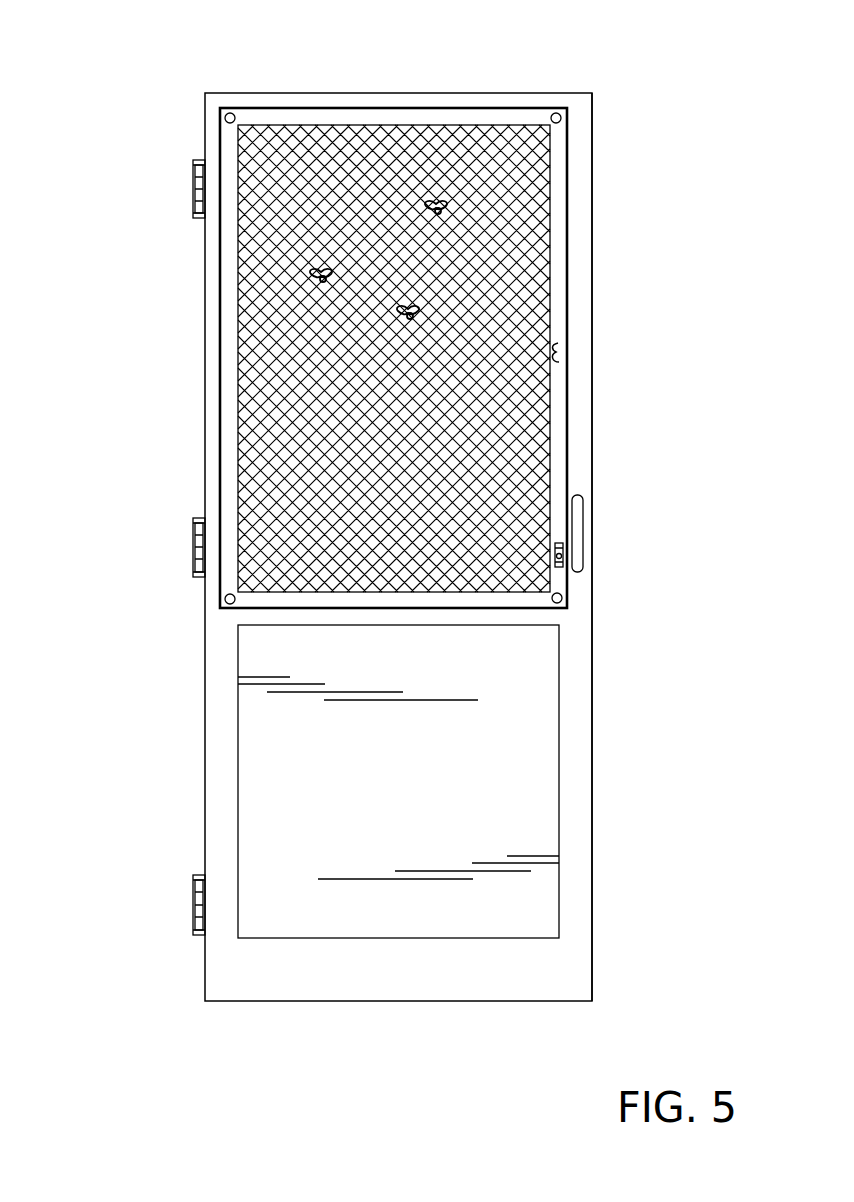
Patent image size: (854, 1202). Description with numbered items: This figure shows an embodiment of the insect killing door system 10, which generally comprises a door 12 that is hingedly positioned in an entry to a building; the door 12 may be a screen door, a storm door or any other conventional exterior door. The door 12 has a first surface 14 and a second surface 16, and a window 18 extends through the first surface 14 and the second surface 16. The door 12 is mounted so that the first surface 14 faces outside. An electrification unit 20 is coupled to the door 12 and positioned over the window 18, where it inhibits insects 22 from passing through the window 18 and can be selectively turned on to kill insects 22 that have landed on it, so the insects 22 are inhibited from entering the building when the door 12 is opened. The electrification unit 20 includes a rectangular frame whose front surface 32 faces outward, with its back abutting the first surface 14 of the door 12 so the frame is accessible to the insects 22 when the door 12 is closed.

The insect killing door system 10 is at (148, 72).
The door 12 is at (205, 128).
The first surface 14 is at (575, 684).
The second surface 16 is at (595, 223).
The window 18 is at (385, 110).
The electrification unit 20 is at (320, 108).
The insects 22 is at (438, 200).
The front surface 32 is at (556, 352).